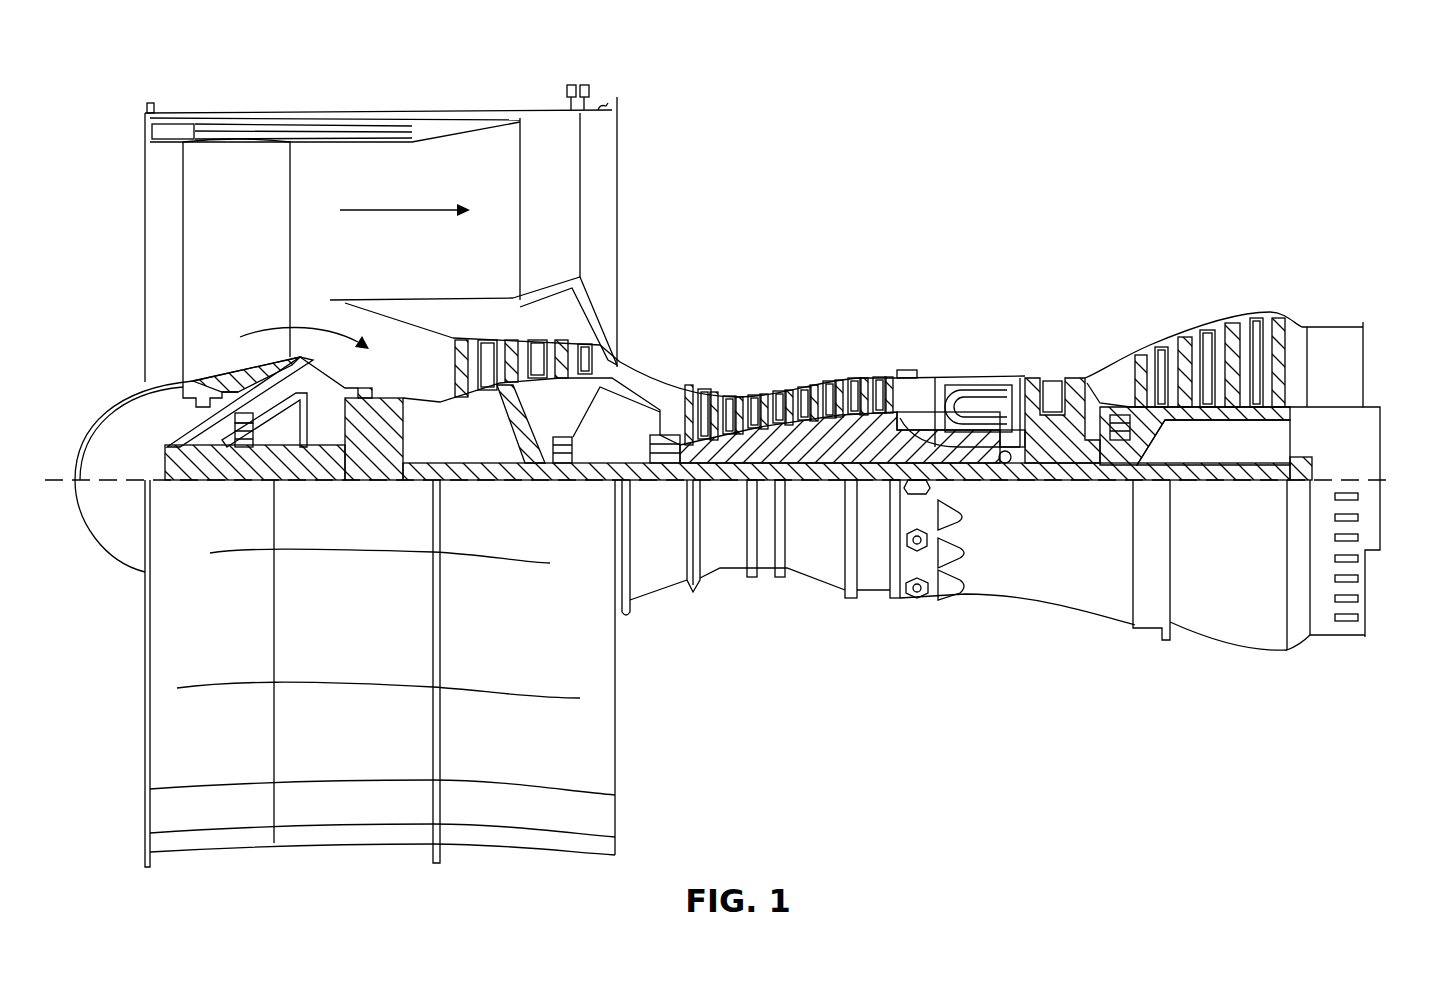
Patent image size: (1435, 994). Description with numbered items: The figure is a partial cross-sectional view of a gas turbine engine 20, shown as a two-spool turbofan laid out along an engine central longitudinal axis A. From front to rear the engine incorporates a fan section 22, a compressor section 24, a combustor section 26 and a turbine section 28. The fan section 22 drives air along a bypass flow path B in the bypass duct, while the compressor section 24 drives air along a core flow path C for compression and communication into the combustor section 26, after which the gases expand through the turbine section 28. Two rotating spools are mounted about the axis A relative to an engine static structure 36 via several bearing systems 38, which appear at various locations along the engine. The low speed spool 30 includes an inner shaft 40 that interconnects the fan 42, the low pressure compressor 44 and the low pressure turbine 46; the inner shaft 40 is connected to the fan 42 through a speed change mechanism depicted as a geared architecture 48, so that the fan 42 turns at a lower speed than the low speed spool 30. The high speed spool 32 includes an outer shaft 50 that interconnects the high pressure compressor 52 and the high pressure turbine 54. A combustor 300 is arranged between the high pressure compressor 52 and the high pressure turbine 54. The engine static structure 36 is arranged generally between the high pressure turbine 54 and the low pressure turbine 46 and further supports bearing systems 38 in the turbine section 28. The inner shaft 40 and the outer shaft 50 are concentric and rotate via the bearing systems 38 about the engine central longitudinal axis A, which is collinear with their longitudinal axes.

The gas turbine engine 20 is at (1252, 78).
The fan section 22 is at (238, 103).
The compressor section 24 is at (762, 305).
The combustor section 26 is at (949, 288).
The turbine section 28 is at (1129, 270).
The low speed spool 30 is at (833, 490).
The high speed spool 32 is at (893, 433).
The engine static structure 36 is at (876, 605).
The bearing systems 38 is at (247, 432).
The inner shaft 40 is at (664, 483).
The fan 42 is at (215, 215).
The low pressure compressor 44 is at (533, 363).
The low pressure turbine 46 is at (1215, 332).
The geared architecture 48 is at (388, 452).
The outer shaft 50 is at (1012, 462).
The high pressure compressor 52 is at (797, 447).
The high pressure turbine 54 is at (1052, 378).
The combustor 300 is at (972, 403).
The engine central longitudinal axis A is at (1392, 476).
The bypass flow path B is at (408, 208).
The core flow path C is at (270, 330).